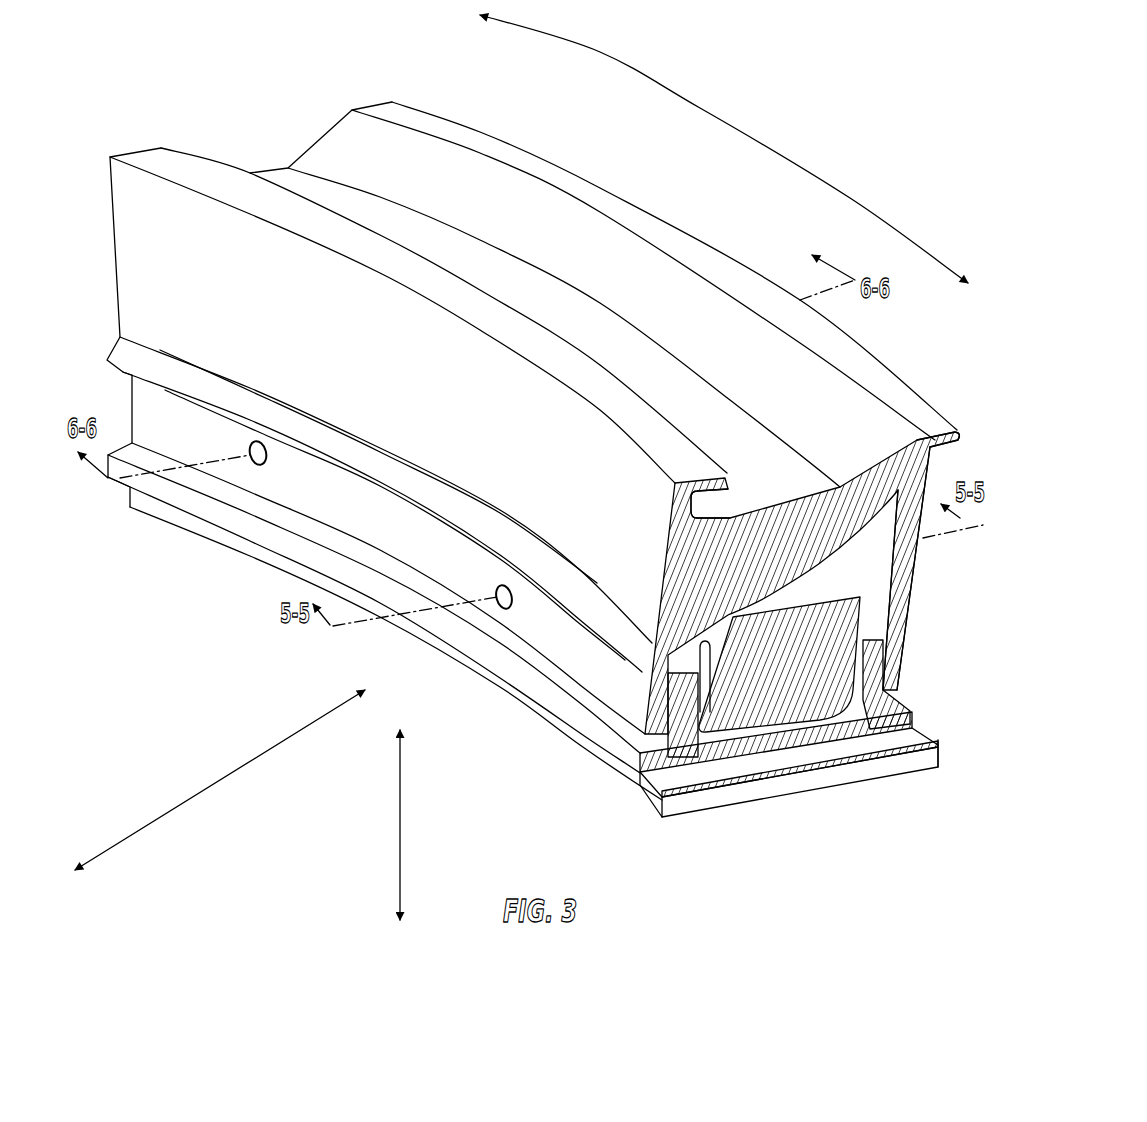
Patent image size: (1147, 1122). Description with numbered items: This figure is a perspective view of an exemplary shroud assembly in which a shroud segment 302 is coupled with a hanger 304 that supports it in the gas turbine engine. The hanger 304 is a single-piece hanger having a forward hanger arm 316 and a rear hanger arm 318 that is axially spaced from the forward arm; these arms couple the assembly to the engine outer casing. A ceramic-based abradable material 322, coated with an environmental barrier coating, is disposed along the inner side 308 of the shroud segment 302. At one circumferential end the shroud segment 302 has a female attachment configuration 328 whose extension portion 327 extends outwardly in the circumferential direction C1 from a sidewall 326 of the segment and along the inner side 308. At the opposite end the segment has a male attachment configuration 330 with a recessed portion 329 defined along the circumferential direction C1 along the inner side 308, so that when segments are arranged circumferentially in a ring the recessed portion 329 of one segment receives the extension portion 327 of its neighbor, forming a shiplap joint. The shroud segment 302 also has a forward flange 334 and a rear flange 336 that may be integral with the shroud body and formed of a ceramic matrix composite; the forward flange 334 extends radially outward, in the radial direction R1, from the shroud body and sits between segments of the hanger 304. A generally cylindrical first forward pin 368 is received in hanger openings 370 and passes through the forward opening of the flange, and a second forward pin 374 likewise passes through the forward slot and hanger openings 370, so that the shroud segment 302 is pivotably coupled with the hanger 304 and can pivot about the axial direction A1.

The shroud segment 302 is at (710, 755).
The hanger 304 is at (928, 592).
The inner side 308 is at (782, 801).
The forward hanger arm 316 is at (731, 481).
The rear hanger arm 318 is at (958, 438).
The ceramic-based abradable material 322 is at (638, 793).
The sidewall 326 is at (668, 764).
The extension portion 327 is at (922, 727).
The female attachment configuration 328 is at (950, 770).
The recessed portion 329 is at (125, 494).
The male attachment configuration 330 is at (103, 492).
The forward flange 334 is at (683, 662).
The rear flange 336 is at (884, 690).
The first forward pin 368 is at (509, 609).
The hanger openings 370 is at (374, 523).
The second forward pin 374 is at (263, 465).
The axial direction A1 is at (220, 780).
The radial direction R1 is at (399, 825).
The circumferential direction C1 is at (724, 149).